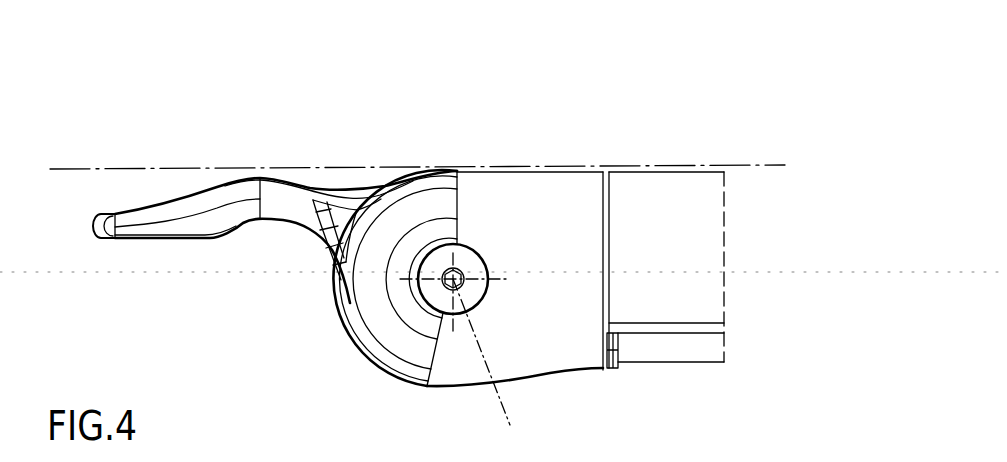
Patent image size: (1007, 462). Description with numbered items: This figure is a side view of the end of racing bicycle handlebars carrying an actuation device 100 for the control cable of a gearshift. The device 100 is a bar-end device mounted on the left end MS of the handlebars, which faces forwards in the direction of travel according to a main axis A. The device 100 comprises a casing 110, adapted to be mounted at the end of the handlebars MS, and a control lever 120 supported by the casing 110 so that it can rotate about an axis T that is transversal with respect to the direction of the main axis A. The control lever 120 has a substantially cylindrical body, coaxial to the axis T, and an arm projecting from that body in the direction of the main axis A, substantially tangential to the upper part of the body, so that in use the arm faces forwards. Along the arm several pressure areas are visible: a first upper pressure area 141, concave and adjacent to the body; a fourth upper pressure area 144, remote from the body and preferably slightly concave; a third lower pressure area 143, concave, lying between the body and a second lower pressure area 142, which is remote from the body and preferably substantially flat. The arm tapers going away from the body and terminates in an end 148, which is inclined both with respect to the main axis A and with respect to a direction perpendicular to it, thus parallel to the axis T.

The actuation device 100 is at (280, 346).
The casing 110 is at (548, 208).
The control lever 120 is at (244, 203).
The first upper pressure area 141 is at (328, 186).
The second lower pressure area 142 is at (162, 240).
The third lower pressure area 143 is at (277, 222).
The fourth upper pressure area 144 is at (133, 208).
The end 148 is at (92, 230).
The left end of handlebars MS is at (647, 203).
The main axis A is at (760, 168).
The axis T is at (487, 367).